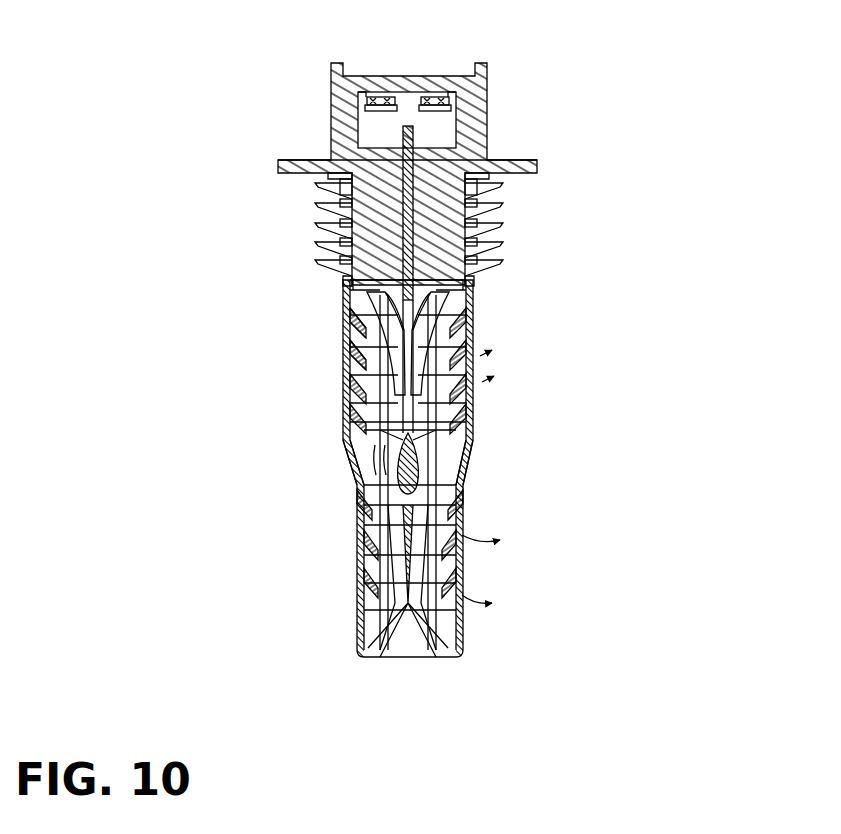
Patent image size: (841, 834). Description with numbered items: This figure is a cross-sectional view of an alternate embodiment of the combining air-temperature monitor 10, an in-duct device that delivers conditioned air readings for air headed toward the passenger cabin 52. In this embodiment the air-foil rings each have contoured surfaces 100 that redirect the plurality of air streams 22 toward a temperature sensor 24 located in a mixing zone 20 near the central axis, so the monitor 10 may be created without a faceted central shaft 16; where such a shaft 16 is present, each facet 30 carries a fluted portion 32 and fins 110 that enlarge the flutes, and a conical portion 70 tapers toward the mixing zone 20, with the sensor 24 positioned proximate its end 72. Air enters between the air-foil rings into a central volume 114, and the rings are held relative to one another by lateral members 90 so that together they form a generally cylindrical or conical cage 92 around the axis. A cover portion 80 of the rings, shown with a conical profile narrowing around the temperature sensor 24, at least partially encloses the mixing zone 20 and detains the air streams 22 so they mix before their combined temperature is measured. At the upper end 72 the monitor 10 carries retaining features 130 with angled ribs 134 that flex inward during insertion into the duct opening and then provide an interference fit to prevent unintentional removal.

The combining air-temperature monitor 10 is at (205, 128).
The passenger cabin 52 is at (433, 96).
The retaining features 130 is at (522, 190).
The ribs 134 is at (322, 217).
The central volume 114 is at (346, 285).
The facet 30 is at (440, 292).
The fluted portion 32 is at (345, 320).
The air streams 22 is at (347, 325).
The cage 92 is at (335, 340).
The lateral members 90 is at (475, 333).
The faceted central shaft 16 is at (478, 392).
The fins 110 is at (380, 388).
The mixing zone 20 is at (370, 455).
The temperature sensor 24 is at (422, 465).
The cover portion 80 is at (350, 476).
The end 72 is at (462, 505).
The contoured surface 100 is at (368, 530).
The conical portion 70 is at (355, 565).